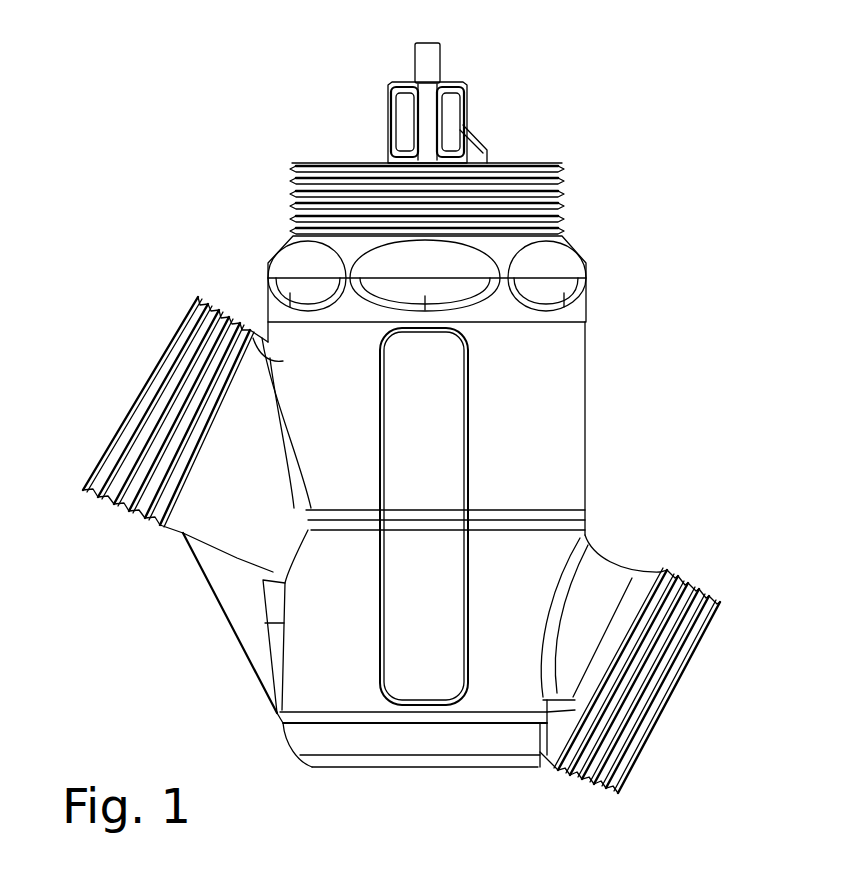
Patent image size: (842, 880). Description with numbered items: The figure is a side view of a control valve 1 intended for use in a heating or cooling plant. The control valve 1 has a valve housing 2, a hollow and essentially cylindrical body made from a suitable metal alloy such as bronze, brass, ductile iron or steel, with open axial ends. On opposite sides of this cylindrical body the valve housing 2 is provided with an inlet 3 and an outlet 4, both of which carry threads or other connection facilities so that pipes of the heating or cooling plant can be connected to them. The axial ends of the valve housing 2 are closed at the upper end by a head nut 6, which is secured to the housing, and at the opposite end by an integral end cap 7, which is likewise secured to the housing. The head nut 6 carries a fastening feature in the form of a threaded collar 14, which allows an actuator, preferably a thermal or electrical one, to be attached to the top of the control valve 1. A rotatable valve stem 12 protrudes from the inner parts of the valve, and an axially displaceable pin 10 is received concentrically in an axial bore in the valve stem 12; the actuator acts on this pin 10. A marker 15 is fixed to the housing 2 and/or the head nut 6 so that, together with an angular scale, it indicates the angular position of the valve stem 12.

The control valve 1 is at (170, 135).
The valve housing 2 is at (310, 650).
The inlet 3 is at (138, 382).
The outlet 4 is at (670, 696).
The head nut 6 is at (565, 265).
The end cap 7 is at (317, 732).
The pin 10 is at (425, 60).
The valve stem 12 is at (398, 115).
The threaded collar 14 is at (562, 195).
The marker 15 is at (483, 138).